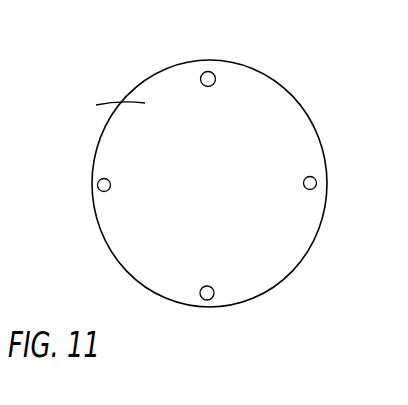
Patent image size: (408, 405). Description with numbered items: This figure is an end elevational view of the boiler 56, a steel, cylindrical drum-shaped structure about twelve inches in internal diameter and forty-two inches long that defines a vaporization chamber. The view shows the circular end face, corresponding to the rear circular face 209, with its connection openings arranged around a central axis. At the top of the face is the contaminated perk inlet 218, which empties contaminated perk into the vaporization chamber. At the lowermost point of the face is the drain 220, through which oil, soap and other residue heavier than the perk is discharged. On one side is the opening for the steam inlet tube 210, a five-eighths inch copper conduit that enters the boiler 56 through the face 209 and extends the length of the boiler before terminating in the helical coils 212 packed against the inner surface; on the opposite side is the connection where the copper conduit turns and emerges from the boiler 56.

The boiler 56 is at (258, 69).
The rear circular face 209 is at (98, 112).
The steam inlet tube 210 is at (97, 189).
The helical coils 212 is at (339, 163).
The contaminated perk inlet 218 is at (212, 71).
The drain 220 is at (215, 294).